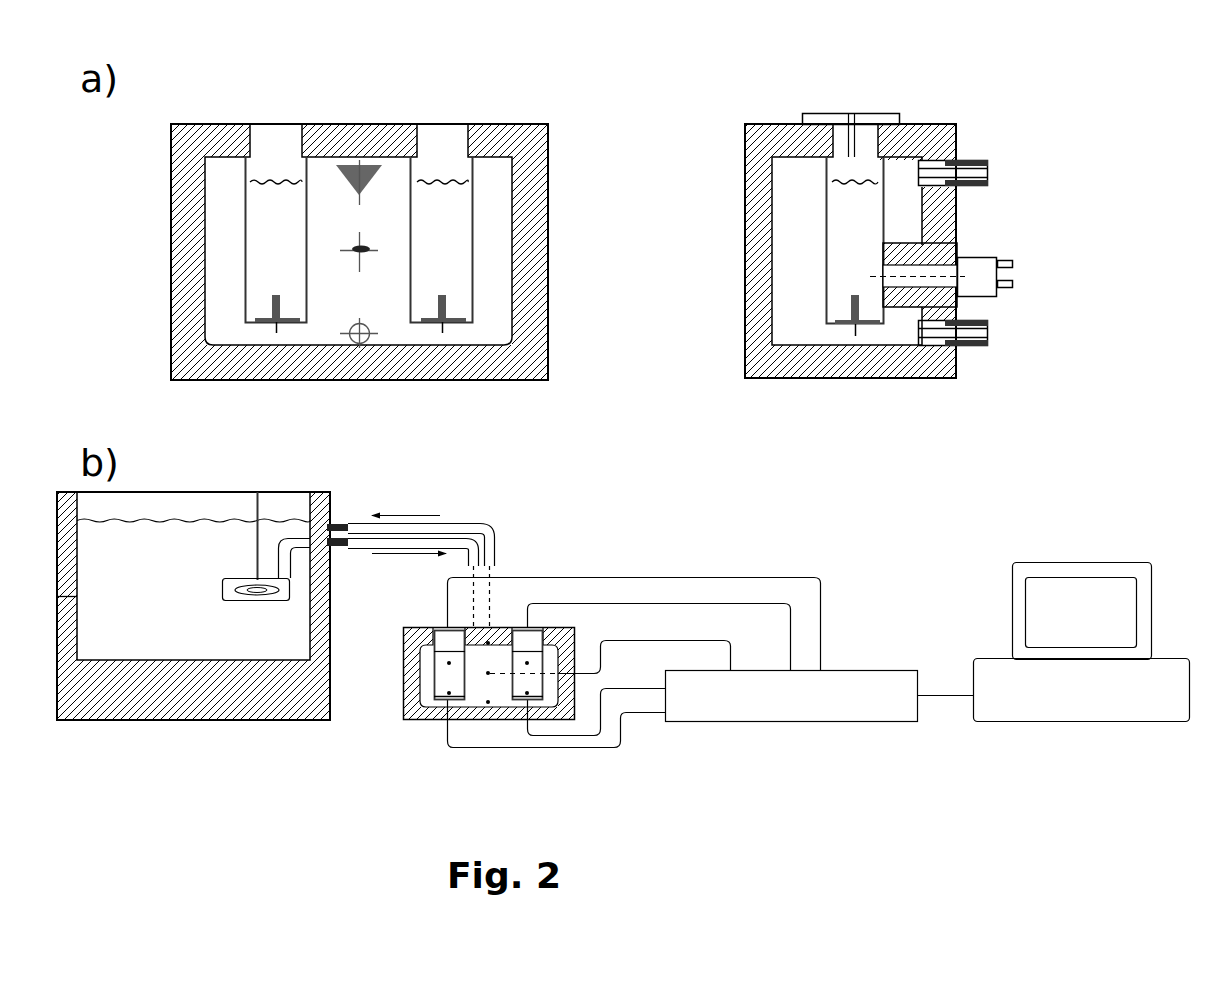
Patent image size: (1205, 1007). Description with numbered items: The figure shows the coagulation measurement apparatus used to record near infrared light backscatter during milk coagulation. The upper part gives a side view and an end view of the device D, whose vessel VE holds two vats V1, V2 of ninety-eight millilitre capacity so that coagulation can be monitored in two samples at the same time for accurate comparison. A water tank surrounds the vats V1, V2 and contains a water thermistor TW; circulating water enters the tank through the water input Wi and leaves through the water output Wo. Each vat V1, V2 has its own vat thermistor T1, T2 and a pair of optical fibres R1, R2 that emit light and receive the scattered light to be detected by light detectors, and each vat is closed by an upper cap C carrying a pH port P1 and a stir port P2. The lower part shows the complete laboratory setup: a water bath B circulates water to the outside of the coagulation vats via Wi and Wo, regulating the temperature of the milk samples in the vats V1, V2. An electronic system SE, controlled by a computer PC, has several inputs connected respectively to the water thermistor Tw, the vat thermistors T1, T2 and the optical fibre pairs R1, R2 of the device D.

The measuring vessel VE is at (191, 118).
The vat V1 is at (276, 120).
The vat V2 is at (444, 120).
The water thermistor TW is at (362, 249).
The vat thermistor T1 is at (268, 289).
The vat thermistor T2 is at (446, 295).
The device D is at (563, 405).
The upper cap C is at (820, 112).
The pH port P1 is at (842, 108).
The stir port P2 is at (866, 108).
The water output Wo is at (988, 173).
The water input Wi is at (953, 333).
The optical fibres pair R2 is at (975, 270).
The optical fibres pair R1 is at (634, 613).
The water thermistor Tw is at (582, 661).
The water bath B is at (276, 649).
The electronic system SE is at (820, 739).
The computer PC is at (1082, 682).